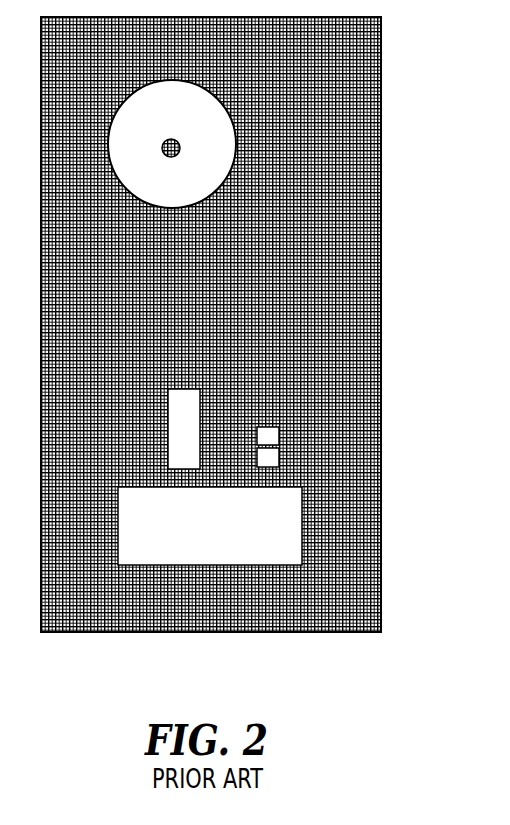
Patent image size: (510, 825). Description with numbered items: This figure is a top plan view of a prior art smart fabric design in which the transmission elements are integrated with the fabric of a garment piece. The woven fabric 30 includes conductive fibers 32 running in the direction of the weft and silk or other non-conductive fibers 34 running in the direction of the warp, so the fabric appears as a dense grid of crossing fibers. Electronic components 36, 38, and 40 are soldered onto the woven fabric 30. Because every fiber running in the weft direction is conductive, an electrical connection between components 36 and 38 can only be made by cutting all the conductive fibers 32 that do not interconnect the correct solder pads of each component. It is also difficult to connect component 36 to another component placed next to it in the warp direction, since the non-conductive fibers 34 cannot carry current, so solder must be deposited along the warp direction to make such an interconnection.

The woven fabric 30 is at (340, 302).
The conductive fibers 32 is at (320, 636).
The non-conductive fibers 34 is at (398, 123).
The electronic component 36 is at (190, 540).
The electronic component 38 is at (195, 439).
The electronic component 40 is at (167, 129).